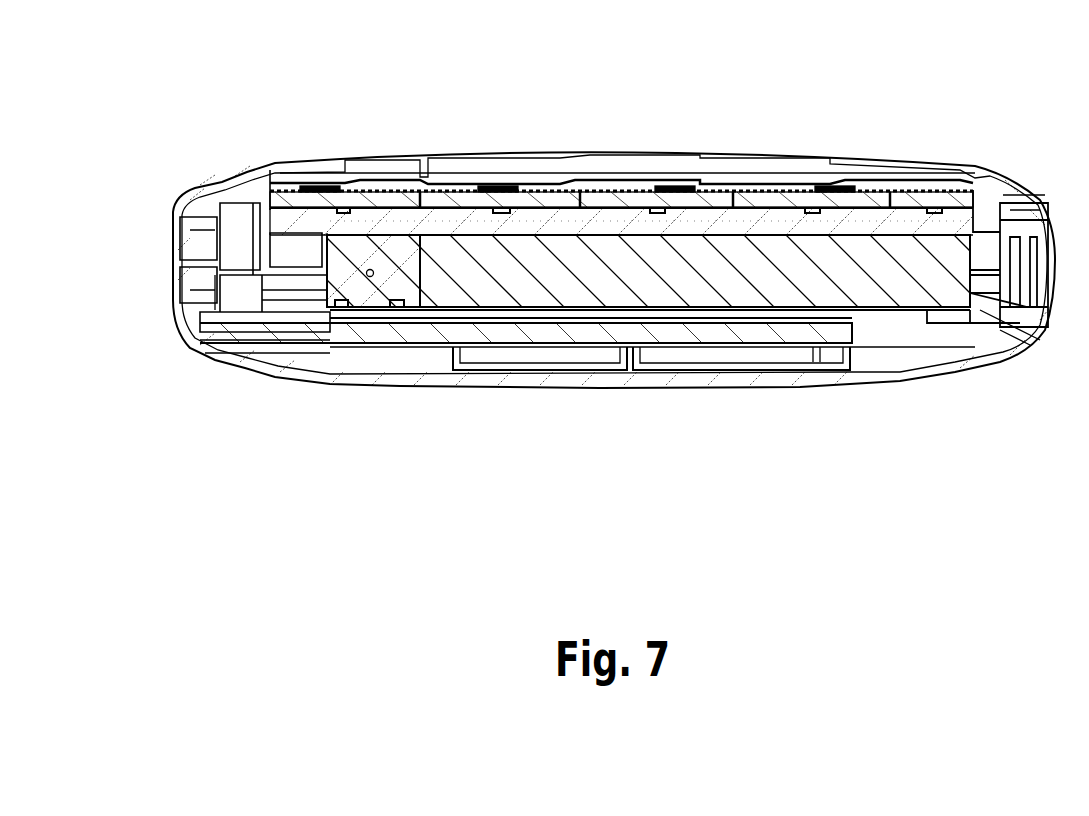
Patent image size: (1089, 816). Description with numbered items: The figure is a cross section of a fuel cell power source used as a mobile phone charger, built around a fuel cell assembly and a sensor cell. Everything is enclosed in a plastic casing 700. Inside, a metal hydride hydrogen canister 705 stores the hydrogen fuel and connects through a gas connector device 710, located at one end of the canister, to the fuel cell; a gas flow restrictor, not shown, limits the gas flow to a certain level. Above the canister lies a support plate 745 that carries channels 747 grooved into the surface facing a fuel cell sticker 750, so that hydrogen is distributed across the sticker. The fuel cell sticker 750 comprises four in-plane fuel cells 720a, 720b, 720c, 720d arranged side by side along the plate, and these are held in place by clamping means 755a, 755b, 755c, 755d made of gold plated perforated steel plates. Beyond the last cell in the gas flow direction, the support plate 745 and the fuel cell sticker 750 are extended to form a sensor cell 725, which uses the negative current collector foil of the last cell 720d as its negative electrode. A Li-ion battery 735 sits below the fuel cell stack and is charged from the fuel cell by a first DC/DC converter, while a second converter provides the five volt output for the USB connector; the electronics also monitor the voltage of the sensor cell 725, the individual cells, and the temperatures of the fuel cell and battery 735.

The plastic casing 700 is at (857, 373).
The metal hydride hydrogen canister 705 is at (450, 292).
The gas connector device 710 is at (345, 277).
The in-plane fuel cell 720a is at (293, 186).
The in-plane fuel cell 720b is at (440, 188).
The in-plane fuel cell 720c is at (607, 198).
The in-plane fuel cell 720d is at (775, 200).
The sensor cell 725 is at (910, 200).
The battery 735 is at (703, 335).
The support plate 745 is at (950, 222).
The channels 747 is at (658, 213).
The fuel cell sticker 750 is at (510, 225).
The clamping means 755a is at (323, 192).
The clamping means 755b is at (497, 192).
The clamping means 755c is at (673, 190).
The clamping means 755d is at (833, 188).